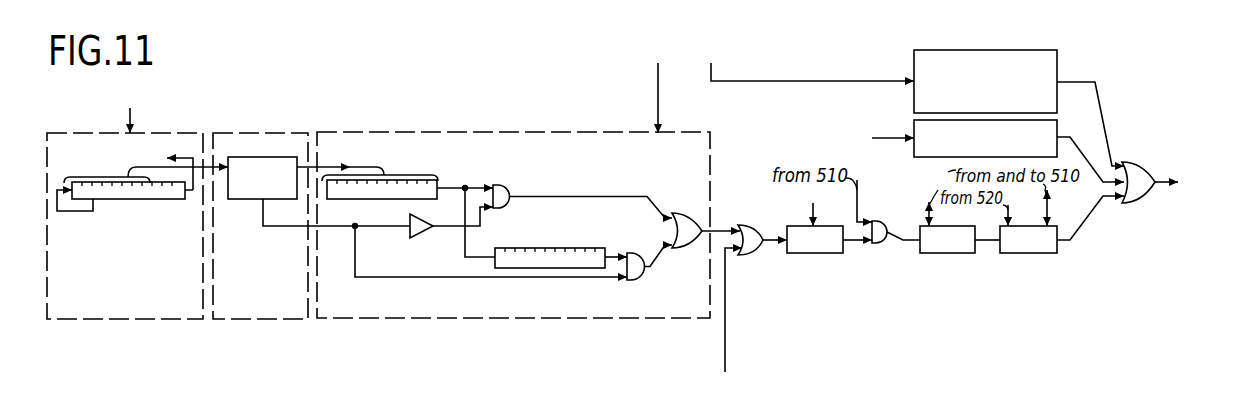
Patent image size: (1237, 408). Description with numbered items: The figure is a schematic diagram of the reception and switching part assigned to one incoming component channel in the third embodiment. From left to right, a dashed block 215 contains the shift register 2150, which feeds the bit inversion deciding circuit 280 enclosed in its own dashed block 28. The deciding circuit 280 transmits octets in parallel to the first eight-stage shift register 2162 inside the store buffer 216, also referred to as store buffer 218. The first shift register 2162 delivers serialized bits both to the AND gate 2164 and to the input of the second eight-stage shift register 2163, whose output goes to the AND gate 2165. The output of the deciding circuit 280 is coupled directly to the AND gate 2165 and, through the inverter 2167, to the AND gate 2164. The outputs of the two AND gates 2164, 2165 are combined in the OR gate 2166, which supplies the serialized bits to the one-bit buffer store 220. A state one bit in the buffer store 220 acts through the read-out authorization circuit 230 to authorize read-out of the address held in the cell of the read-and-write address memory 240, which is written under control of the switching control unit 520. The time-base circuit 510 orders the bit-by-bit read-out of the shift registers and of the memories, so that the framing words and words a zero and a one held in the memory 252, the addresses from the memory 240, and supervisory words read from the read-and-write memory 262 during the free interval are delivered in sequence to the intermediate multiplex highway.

The clock extraction and reshaping circuit stage 215 is at (100, 320).
The shift register 2150 is at (110, 200).
The bit inversion deciding circuit block 28 is at (240, 320).
The bit inversion deciding circuit 280 is at (319, 191).
The store buffer 216 is at (480, 318).
The first shift register 2162 is at (418, 183).
The second shift register 2163 is at (556, 248).
The AND gate 2164 is at (502, 186).
The AND gate 2165 is at (640, 277).
The OR gate 2166 is at (684, 213).
The inverter 2167 is at (418, 238).
The store buffer 218 is at (722, 346).
The time-base circuit 510 is at (650, 66).
The switching control unit 520 is at (864, 125).
The memory 252 is at (1058, 62).
The read-and-write memory 262 is at (1057, 128).
The one-bit buffer store 220 is at (813, 253).
The read-out authorization circuit 230 is at (945, 253).
The read-and-write address memory 240 is at (1025, 253).